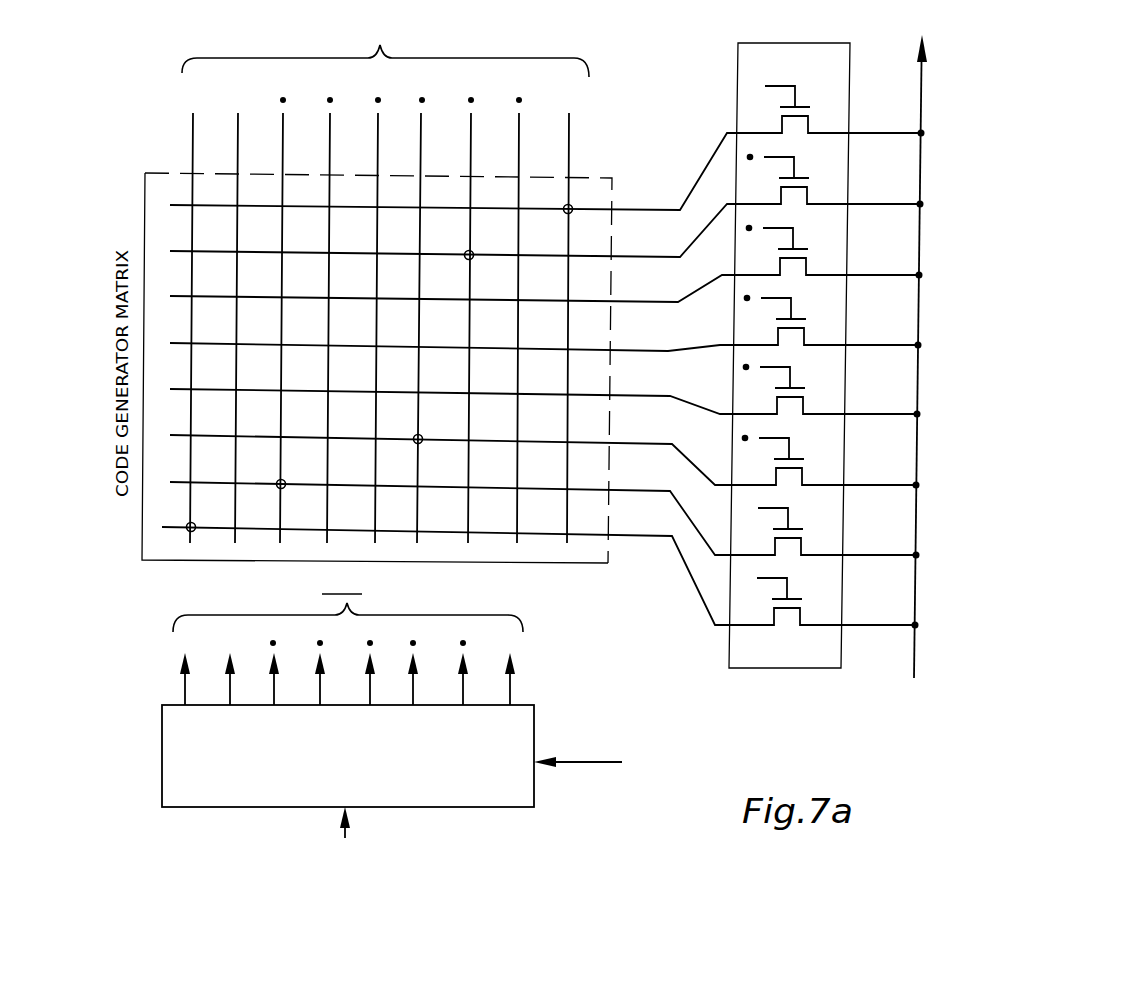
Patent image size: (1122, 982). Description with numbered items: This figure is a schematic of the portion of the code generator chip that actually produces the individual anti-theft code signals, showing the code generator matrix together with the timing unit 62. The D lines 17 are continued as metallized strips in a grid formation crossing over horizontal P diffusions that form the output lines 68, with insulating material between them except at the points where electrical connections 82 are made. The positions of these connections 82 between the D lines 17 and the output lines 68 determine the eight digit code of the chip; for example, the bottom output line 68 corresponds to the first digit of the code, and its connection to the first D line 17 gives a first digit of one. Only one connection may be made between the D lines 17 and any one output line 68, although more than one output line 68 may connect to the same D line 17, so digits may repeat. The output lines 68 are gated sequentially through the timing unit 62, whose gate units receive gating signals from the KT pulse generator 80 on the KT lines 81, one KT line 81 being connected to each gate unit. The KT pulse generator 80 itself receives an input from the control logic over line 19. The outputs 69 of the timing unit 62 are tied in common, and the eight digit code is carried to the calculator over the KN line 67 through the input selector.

The D lines 17 is at (512, 29).
The control input line 19 is at (573, 762).
The timing unit 62 is at (728, 645).
The KN line 67 is at (1010, 356).
The output lines 68 is at (658, 224).
The outputs of the timing unit 69 is at (872, 134).
The KT pulse generator 80 is at (162, 771).
The KT lines 81 is at (501, 572).
The electrical connections 82 is at (564, 212).